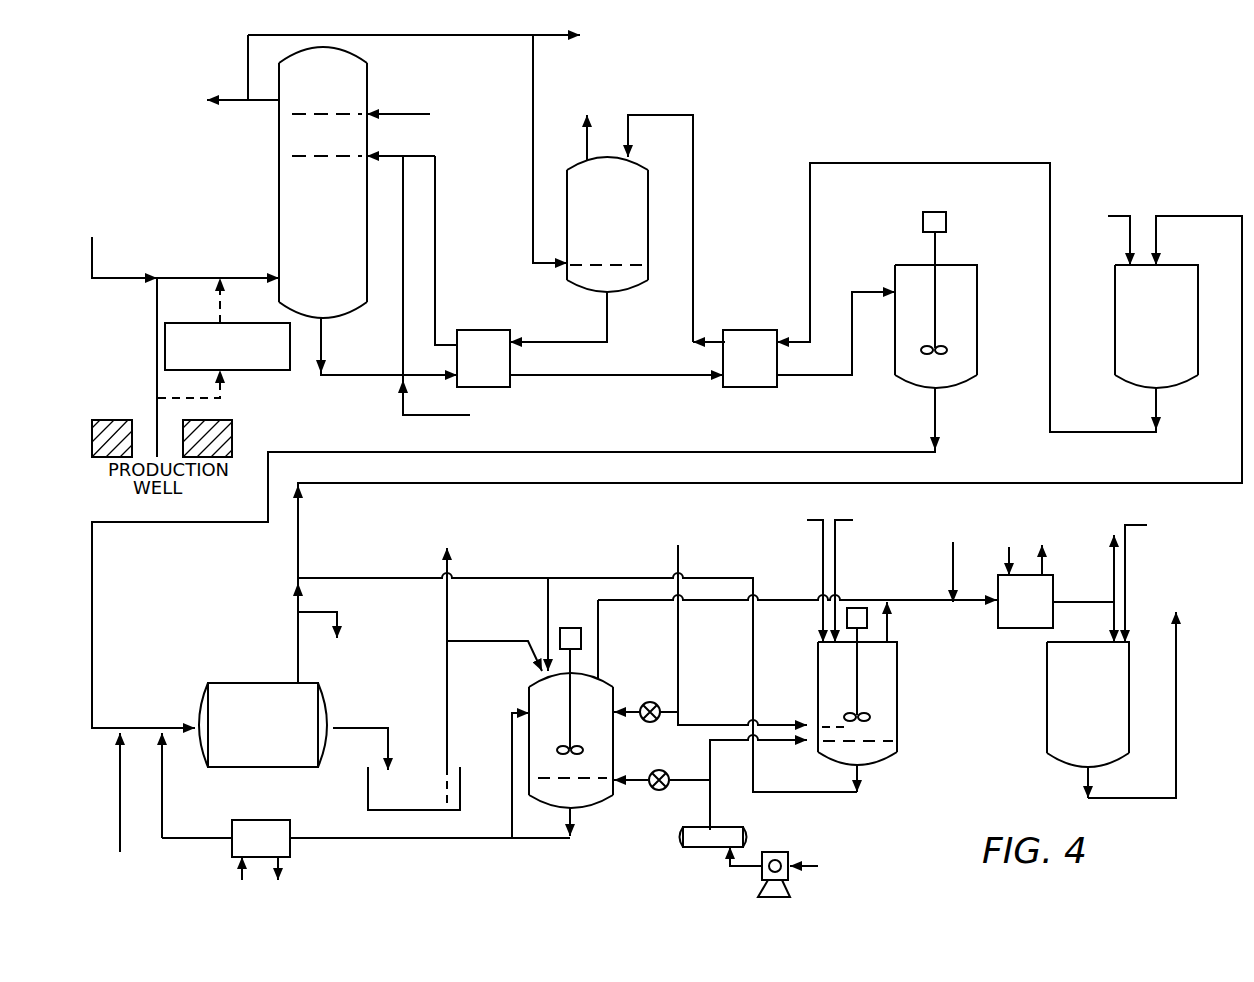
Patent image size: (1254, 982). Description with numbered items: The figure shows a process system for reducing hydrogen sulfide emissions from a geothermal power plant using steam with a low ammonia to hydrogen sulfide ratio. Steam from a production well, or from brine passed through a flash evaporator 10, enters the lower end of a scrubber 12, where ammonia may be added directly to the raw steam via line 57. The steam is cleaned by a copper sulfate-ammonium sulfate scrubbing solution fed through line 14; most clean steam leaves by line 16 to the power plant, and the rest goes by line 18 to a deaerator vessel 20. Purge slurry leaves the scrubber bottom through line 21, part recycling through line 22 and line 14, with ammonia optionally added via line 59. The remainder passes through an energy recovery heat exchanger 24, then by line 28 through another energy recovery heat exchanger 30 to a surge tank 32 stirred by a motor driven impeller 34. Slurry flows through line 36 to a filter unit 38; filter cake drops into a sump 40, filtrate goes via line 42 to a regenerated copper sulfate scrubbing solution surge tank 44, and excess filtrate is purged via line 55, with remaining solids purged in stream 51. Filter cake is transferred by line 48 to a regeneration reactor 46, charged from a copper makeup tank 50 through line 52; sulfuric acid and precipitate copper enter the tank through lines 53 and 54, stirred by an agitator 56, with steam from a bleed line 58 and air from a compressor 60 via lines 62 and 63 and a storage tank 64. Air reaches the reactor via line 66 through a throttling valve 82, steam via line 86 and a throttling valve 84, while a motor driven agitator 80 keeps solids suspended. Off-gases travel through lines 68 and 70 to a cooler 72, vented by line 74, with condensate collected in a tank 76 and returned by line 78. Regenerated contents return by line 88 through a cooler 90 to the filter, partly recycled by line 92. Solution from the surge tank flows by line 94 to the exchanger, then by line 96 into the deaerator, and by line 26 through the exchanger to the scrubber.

The flash evaporator 10 is at (252, 370).
The scrubber 12 is at (278, 197).
The line 14 is at (391, 155).
The line 16 is at (240, 100).
The line 18 is at (533, 72).
The deaerator vessel 20 is at (648, 217).
The line 21 is at (322, 349).
The line 22 is at (403, 248).
The energy recovery heat exchanger 24 is at (470, 330).
The line 26 is at (607, 323).
The line 28 is at (610, 375).
The energy recovery heat exchanger 30 is at (758, 303).
The surge tank 32 is at (977, 292).
The motor driven impeller 34 is at (944, 344).
The line 36 is at (705, 457).
The filter unit 38 is at (247, 683).
The sump 40 is at (368, 786).
The line 42 is at (366, 483).
The regenerated copper sulfate scrubbing solution surge tank 44 is at (1115, 327).
The regeneration reactor 46 is at (527, 689).
The line 48 is at (494, 641).
The copper makeup tank 50 is at (897, 722).
The stream 51 is at (449, 572).
The line 52 is at (795, 792).
The line 53 is at (823, 543).
The line 54 is at (837, 570).
The line 55 is at (343, 618).
The agitator 56 is at (866, 712).
The line 57 is at (92, 257).
The bleed line 58 is at (553, 37).
The line 59 is at (428, 418).
The compressor 60 is at (773, 852).
The line 62 is at (728, 862).
The line 63 is at (708, 758).
The storage tank 64 is at (698, 842).
The line 66 is at (651, 771).
The line 68 is at (587, 136).
The line 70 is at (653, 600).
The cooler 72 is at (1015, 628).
The line 74 is at (1113, 575).
The tank 76 is at (1046, 697).
The line 78 is at (394, 113).
The motor driven agitator 80 is at (579, 748).
The throttling valve 82 is at (662, 791).
The throttling valve 84 is at (644, 703).
The line 86 is at (668, 712).
The line 88 is at (406, 840).
The cooler 90 is at (255, 820).
The line 92 is at (512, 742).
The line 94 is at (945, 163).
The line 96 is at (695, 159).